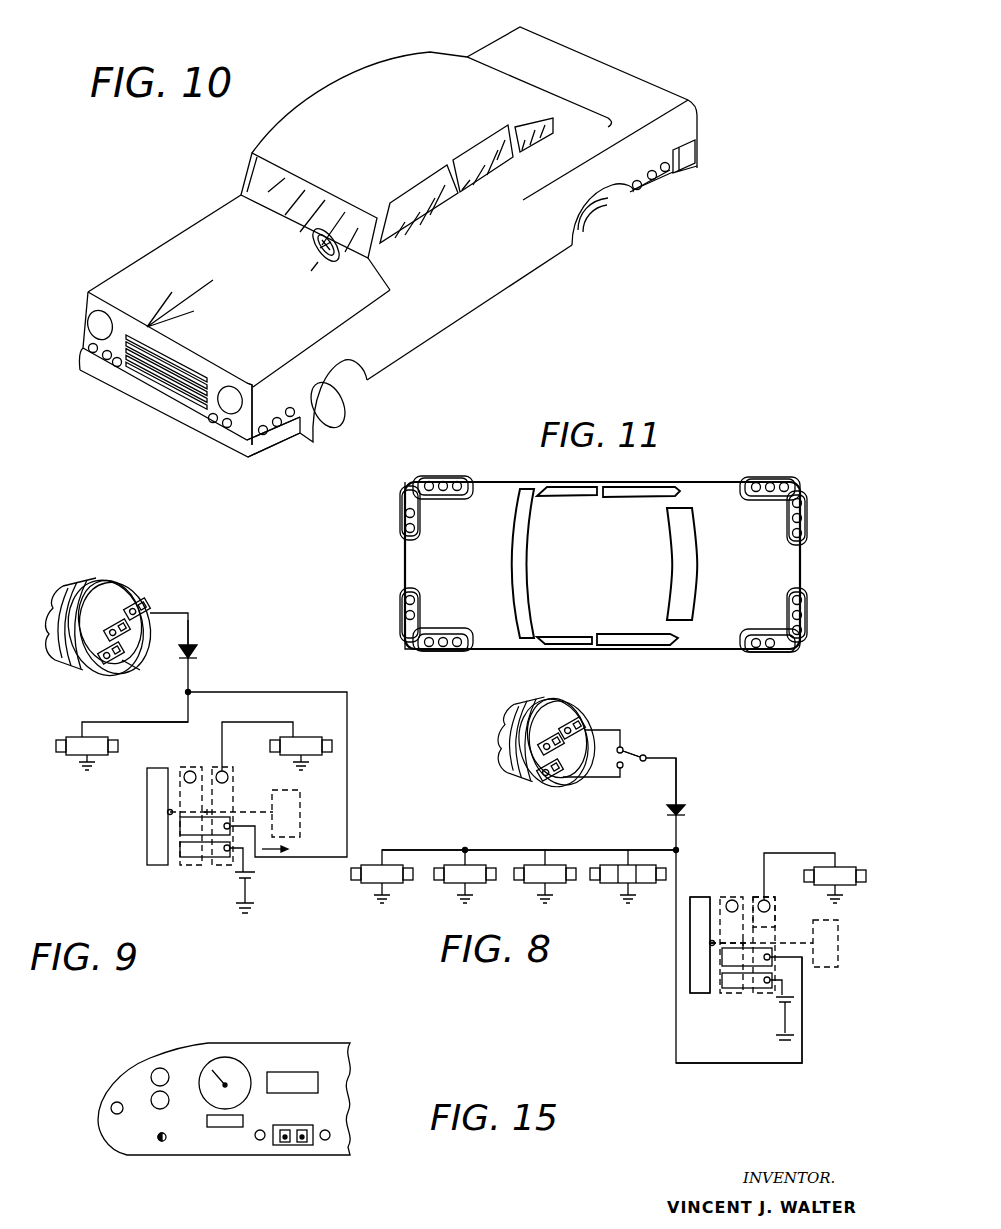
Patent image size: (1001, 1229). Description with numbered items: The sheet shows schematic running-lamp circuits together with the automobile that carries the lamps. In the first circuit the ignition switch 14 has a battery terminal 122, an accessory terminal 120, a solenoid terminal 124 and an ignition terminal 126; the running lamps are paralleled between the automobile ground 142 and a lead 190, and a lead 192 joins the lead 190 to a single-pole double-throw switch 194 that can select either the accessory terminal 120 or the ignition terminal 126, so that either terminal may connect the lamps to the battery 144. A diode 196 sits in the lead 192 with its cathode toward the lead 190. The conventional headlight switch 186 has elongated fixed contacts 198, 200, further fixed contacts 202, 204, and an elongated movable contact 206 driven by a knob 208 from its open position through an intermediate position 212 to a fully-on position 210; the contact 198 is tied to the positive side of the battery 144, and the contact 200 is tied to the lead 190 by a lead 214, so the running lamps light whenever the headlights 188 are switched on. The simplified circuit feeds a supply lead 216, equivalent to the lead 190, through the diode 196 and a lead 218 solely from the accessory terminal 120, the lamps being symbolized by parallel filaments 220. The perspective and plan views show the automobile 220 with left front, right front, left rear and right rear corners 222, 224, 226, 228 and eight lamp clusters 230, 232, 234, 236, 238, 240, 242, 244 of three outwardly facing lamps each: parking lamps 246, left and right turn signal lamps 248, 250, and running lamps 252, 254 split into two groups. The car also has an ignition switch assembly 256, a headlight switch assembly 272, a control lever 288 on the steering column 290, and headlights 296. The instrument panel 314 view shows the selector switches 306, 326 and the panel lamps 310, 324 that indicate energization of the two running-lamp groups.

In FIG. 9, the ignition switch 14 is at (116, 562).
In FIG. 8, the ignition switch 14 is at (494, 757).
In FIG. 9, the accessory terminal 120 is at (148, 608).
In FIG. 8, the accessory terminal 120 is at (583, 727).
In FIG. 9, the battery terminal 122 is at (88, 667).
In FIG. 8, the battery terminal 122 is at (535, 785).
In FIG. 9, the solenoid terminal 124 is at (125, 582).
In FIG. 8, the solenoid terminal 124 is at (532, 700).
In FIG. 9, the ignition terminal 126 is at (133, 673).
In FIG. 8, the ignition terminal 126 is at (618, 750).
In FIG. 8, the automobile ground 142 is at (790, 1043).
In FIG. 9, the battery 144 is at (237, 877).
In FIG. 8, the battery 144 is at (780, 1008).
In FIG. 9, the headlight switch 186 is at (183, 872).
In FIG. 8, the headlight switch 186 is at (725, 1000).
In FIG. 9, the headlights 188 is at (330, 713).
In FIG. 8, the headlights 188 is at (848, 867).
In FIG. 8, the lead 190 is at (517, 850).
In FIG. 8, the lead 192 is at (678, 786).
In FIG. 8, the single-pole double-throw switch 194 is at (641, 762).
In FIG. 9, the diode 196 is at (200, 653).
In FIG. 8, the diode 196 is at (688, 811).
In FIG. 9, the elongated fixed contact 198 is at (205, 852).
In FIG. 8, the elongated fixed contact 198 is at (727, 977).
In FIG. 9, the elongated fixed contact 200 is at (188, 825).
In FIG. 8, the elongated fixed contact 200 is at (723, 960).
In FIG. 8, the fixed contact 202 is at (733, 898).
In FIG. 9, the fixed contact 204 is at (229, 777).
In FIG. 8, the fixed contact 204 is at (762, 897).
In FIG. 8, the movable contact 206 is at (695, 938).
In FIG. 8, the knob 208 is at (838, 967).
In FIG. 8, the position 210 is at (783, 926).
In FIG. 8, the intermediate position 212 is at (727, 922).
In FIG. 8, the lead 214 is at (740, 1065).
In FIG. 9, the supply lead 216 is at (152, 720).
In FIG. 9, the lead 218 is at (192, 633).
In FIG. 10, the automobile 220 is at (165, 240).
In FIG. 9, the automobile 220 is at (110, 758).
In FIG. 10, the left front corner 222 is at (255, 385).
In FIG. 11, the left front corner 222 is at (407, 643).
In FIG. 10, the right front corner 224 is at (88, 302).
In FIG. 11, the right front corner 224 is at (405, 481).
In FIG. 10, the left rear corner 226 is at (667, 110).
In FIG. 10, the right rear corner 228 is at (533, 29).
In FIG. 11, the right rear corner 228 is at (806, 482).
In FIG. 10, the lamp cluster 230 is at (280, 434).
In FIG. 11, the lamp cluster 230 is at (473, 634).
In FIG. 10, the lamp cluster 232 is at (238, 452).
In FIG. 11, the lamp cluster 232 is at (411, 584).
In FIG. 10, the lamp cluster 234 is at (101, 365).
In FIG. 11, the lamp cluster 234 is at (416, 537).
In FIG. 11, the lamp cluster 236 is at (462, 497).
In FIG. 10, the lamp cluster 238 is at (644, 170).
In FIG. 11, the lamp cluster 238 is at (757, 633).
In FIG. 11, the lamp cluster 240 is at (781, 604).
In FIG. 11, the lamp cluster 242 is at (781, 542).
In FIG. 11, the lamp cluster 244 is at (753, 501).
In FIG. 10, the parking lamps 246 is at (668, 172).
In FIG. 11, the parking lamps 246 is at (428, 480).
In FIG. 10, the left turn signal lamps 248 is at (655, 180).
In FIG. 11, the left turn signal lamps 248 is at (405, 614).
In FIG. 10, the right turn signal lamps 250 is at (113, 353).
In FIG. 11, the right turn signal lamps 250 is at (444, 481).
In FIG. 10, the running lamps 252 is at (638, 190).
In FIG. 11, the running lamps 252 is at (823, 583).
In FIG. 10, the running lamps 254 is at (123, 360).
In FIG. 11, the running lamps 254 is at (458, 482).
In FIG. 15, the ignition switch assembly 256 is at (158, 1141).
In FIG. 15, the headlight switch assembly 272 is at (112, 1112).
In FIG. 10, the control lever 288 is at (330, 262).
In FIG. 10, the steering column 290 is at (322, 248).
In FIG. 10, the headlights 296 is at (103, 318).
In FIG. 15, the single-pole double-throw switch 306 is at (285, 1145).
In FIG. 15, the panel lamp 310 is at (258, 1142).
In FIG. 15, the instrument panel 314 is at (350, 1057).
In FIG. 15, the panel lamp 324 is at (331, 1137).
In FIG. 15, the single-pole double-throw switch 326 is at (302, 1145).